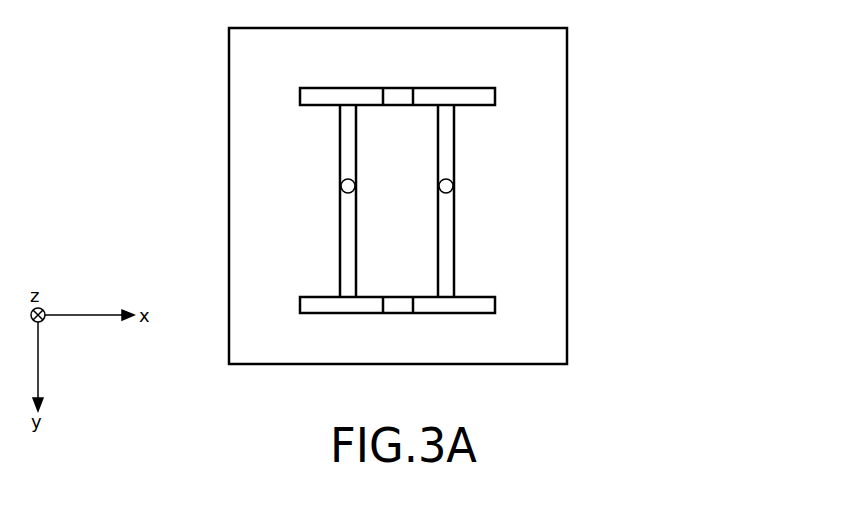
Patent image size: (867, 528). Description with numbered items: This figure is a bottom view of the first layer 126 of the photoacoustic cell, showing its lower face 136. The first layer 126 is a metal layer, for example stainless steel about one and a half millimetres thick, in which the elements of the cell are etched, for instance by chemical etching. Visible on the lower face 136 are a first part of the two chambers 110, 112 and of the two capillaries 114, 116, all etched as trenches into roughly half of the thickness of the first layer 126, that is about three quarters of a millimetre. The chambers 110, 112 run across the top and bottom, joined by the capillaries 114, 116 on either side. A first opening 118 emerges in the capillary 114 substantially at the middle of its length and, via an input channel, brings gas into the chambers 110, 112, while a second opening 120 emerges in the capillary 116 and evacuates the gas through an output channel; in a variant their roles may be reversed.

The chamber 110 is at (485, 305).
The chamber 112 is at (487, 96).
The capillary 114 is at (348, 132).
The capillary 116 is at (447, 245).
The first opening 118 is at (341, 186).
The second opening 120 is at (453, 185).
The first layer 126 is at (567, 164).
The lower face 136 is at (537, 55).